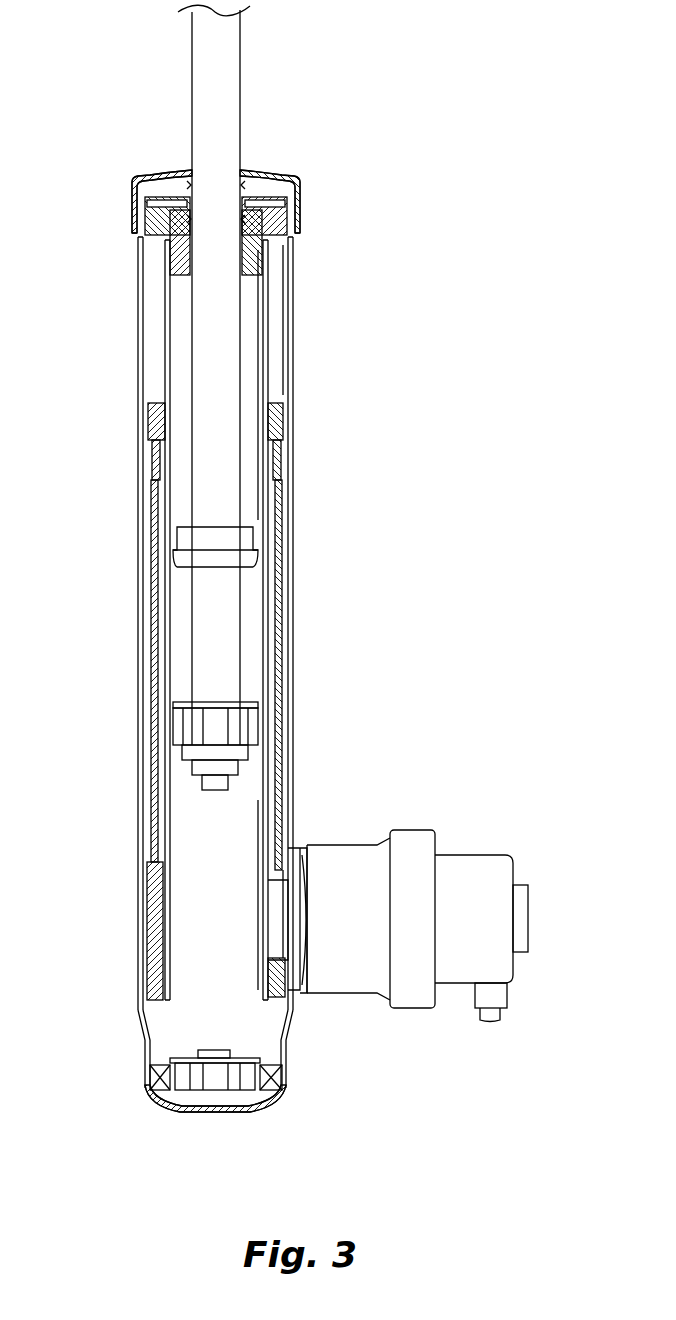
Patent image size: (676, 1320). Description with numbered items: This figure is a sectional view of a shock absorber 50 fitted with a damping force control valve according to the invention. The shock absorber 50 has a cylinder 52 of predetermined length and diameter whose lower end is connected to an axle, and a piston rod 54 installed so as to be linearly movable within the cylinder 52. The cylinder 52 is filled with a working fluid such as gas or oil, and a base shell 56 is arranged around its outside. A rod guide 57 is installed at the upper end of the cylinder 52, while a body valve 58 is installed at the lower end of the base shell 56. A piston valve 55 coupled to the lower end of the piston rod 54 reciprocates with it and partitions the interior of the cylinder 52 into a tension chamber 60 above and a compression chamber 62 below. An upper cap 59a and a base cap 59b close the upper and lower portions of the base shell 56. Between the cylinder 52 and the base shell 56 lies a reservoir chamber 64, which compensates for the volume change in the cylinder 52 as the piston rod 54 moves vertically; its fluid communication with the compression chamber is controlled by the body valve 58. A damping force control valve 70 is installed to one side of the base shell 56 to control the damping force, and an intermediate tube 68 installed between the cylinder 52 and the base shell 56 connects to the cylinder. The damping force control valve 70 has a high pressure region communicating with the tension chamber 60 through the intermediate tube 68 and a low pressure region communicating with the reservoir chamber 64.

The shock absorber 50 is at (308, 588).
The cylinder 52 is at (166, 795).
The piston rod 54 is at (195, 625).
The piston valve 55 is at (172, 728).
The base shell 56 is at (138, 375).
The rod guide 57 is at (166, 255).
The body valve 58 is at (153, 1090).
The upper cap 59a is at (132, 210).
The base cap 59b is at (165, 1098).
The tension chamber 60 is at (248, 352).
The compression chamber 62 is at (237, 822).
The reservoir chamber 64 is at (275, 297).
The intermediate tube 68 is at (279, 730).
The damping force control valve 70 is at (472, 828).